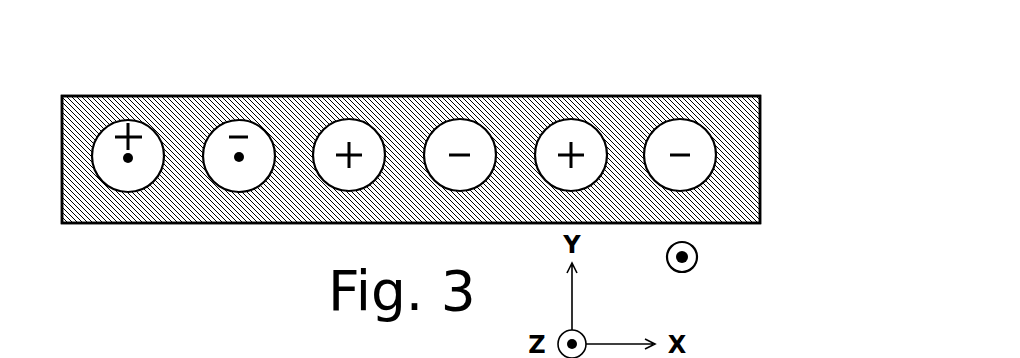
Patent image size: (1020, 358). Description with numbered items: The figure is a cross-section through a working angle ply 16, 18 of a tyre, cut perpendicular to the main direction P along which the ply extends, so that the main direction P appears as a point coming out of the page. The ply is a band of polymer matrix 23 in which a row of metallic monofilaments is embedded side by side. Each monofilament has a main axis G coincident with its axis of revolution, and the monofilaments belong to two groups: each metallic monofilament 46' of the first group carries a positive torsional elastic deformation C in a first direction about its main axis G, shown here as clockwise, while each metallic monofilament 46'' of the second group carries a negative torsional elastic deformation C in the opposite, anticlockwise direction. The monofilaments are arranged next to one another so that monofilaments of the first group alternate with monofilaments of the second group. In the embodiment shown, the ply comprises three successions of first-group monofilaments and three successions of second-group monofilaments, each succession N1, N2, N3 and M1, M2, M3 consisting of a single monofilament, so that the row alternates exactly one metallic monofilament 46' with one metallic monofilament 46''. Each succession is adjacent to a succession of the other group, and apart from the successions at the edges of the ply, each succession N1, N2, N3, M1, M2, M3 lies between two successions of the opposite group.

The working ply 16 is at (776, 120).
The working angle ply 18 is at (472, 147).
The polymer matrix 23 is at (739, 204).
The metallic monofilament of the first group 46' is at (128, 111).
The metallic monofilament of the second group 46'' is at (239, 111).
The main axis G is at (131, 158).
The torsional elastic deformation C is at (117, 110).
The first succession of metallic monofilaments of the first group N1 is at (93, 240).
The first succession of metallic monofilaments of the second group M1 is at (203, 240).
The second succession of metallic monofilaments of the first group N2 is at (315, 85).
The second succession of metallic monofilaments of the second group M2 is at (425, 85).
The third succession of metallic monofilaments of the first group N3 is at (538, 85).
The third succession of metallic monofilaments of the second group M3 is at (648, 85).
The main direction P is at (669, 259).